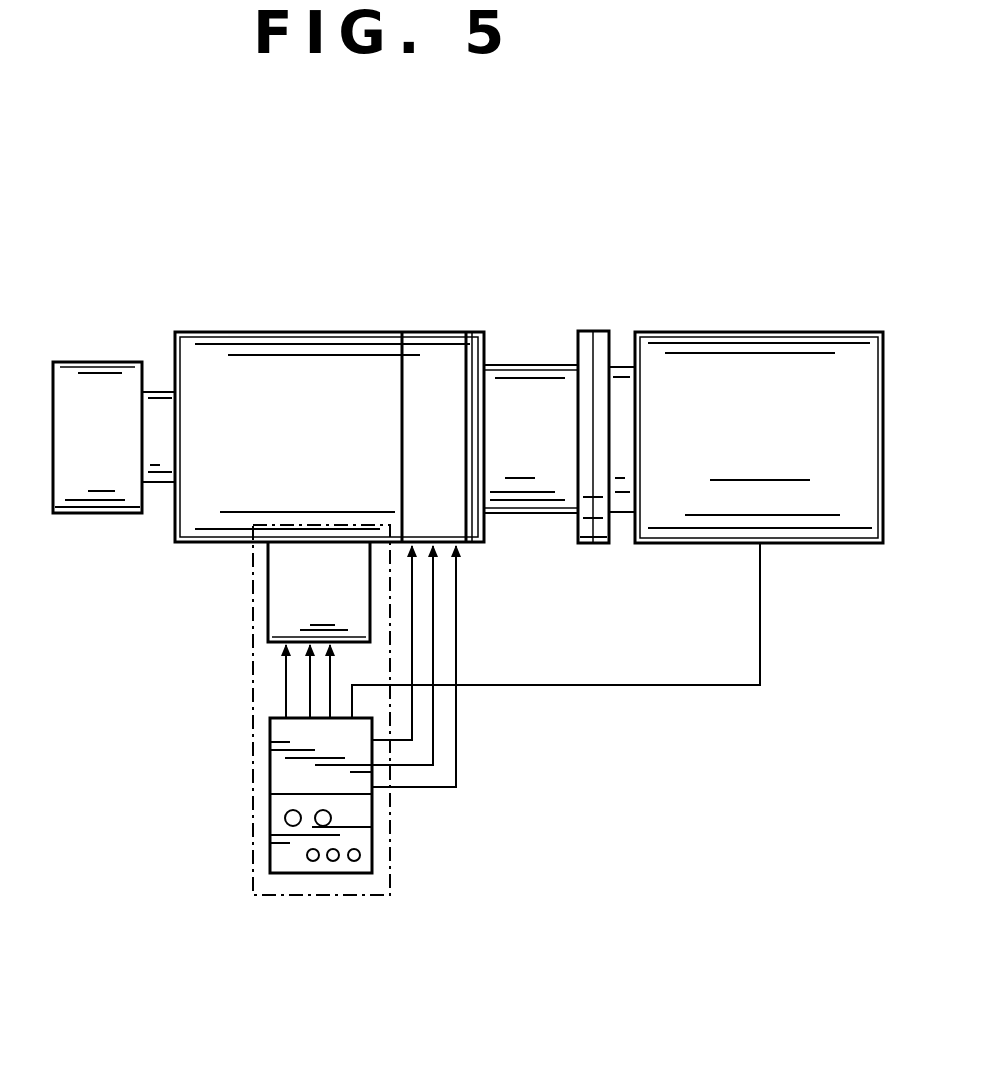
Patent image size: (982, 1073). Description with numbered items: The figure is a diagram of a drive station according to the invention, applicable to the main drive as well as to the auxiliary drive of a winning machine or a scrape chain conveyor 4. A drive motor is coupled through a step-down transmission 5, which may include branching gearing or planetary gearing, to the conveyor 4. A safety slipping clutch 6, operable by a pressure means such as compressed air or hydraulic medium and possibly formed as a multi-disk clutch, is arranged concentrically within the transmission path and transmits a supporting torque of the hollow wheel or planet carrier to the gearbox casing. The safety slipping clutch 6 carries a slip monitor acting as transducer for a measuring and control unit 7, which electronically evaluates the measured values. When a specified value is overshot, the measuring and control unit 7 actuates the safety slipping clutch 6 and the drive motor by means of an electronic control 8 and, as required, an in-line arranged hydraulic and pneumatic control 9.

The conveyor 4 is at (97, 380).
The transmission 5 is at (353, 357).
The safety slipping clutch 6 is at (441, 368).
The measuring and control unit 7 is at (786, 355).
The electronic control 8 is at (307, 770).
The hydraulic and pneumatic control 9 is at (308, 592).